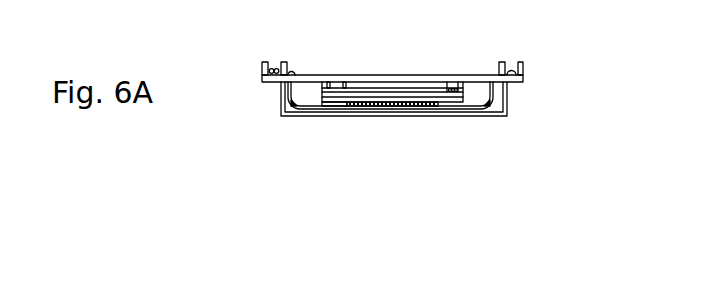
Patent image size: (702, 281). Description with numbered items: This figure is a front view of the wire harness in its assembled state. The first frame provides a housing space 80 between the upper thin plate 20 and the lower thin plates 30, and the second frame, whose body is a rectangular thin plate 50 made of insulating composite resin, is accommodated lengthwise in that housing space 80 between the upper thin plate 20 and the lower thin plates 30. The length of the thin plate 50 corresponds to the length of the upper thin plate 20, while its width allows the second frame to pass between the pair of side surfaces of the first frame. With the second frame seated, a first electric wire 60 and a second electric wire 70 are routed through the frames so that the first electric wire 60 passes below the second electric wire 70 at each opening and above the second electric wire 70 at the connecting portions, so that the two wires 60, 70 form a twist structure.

The upper thin plate 20 is at (452, 75).
The lower thin plates 30 is at (460, 117).
The rectangular thin plate 50 is at (333, 105).
The first electric wire 60 is at (289, 87).
The second electric wire 70 is at (379, 90).
The housing space 80 is at (487, 95).